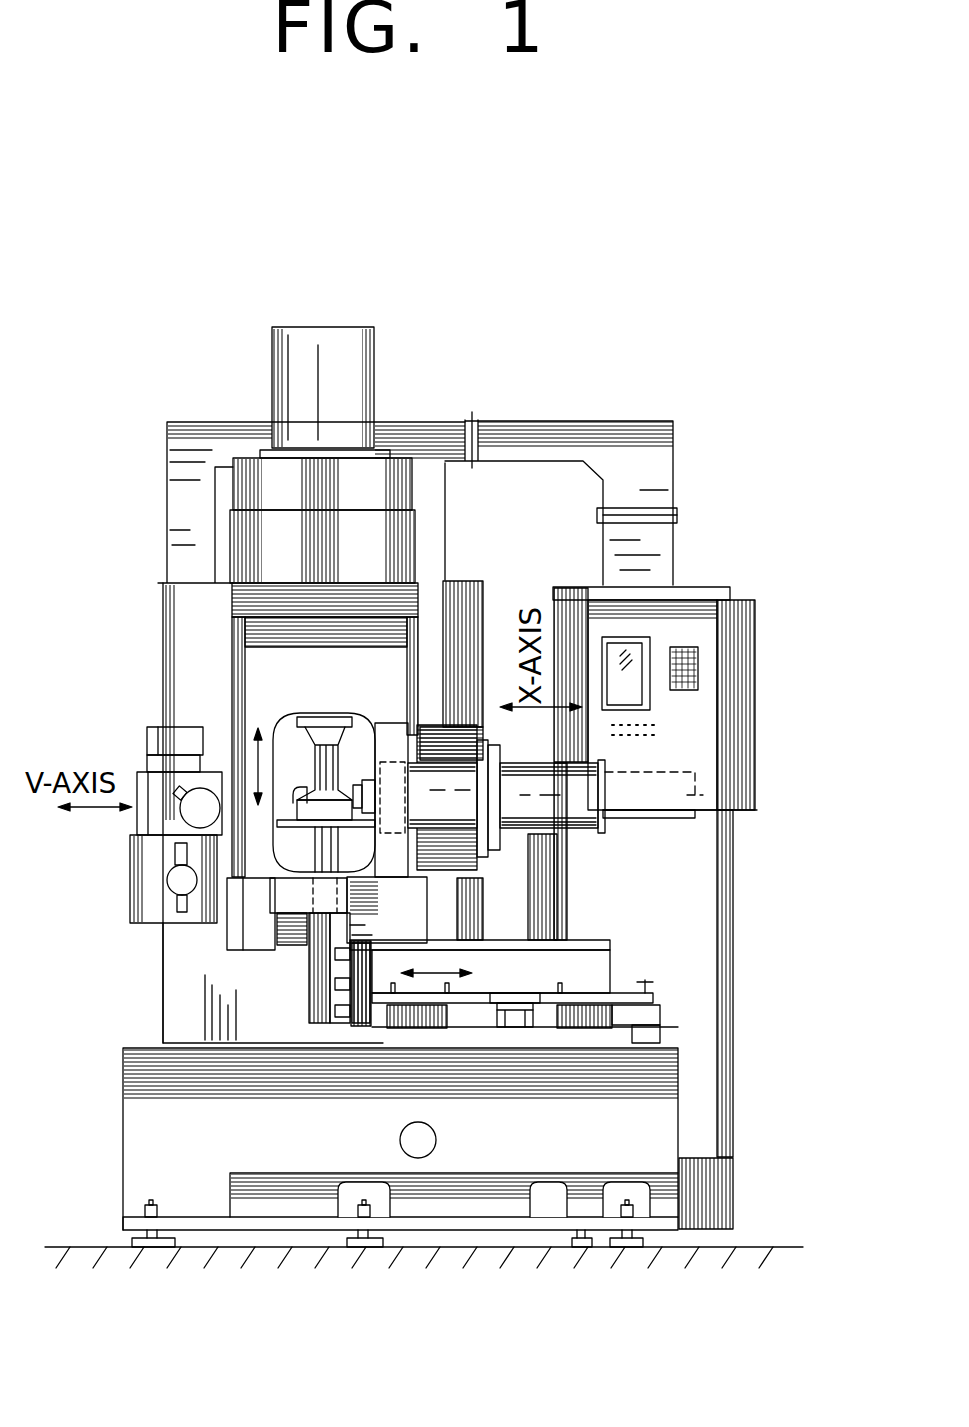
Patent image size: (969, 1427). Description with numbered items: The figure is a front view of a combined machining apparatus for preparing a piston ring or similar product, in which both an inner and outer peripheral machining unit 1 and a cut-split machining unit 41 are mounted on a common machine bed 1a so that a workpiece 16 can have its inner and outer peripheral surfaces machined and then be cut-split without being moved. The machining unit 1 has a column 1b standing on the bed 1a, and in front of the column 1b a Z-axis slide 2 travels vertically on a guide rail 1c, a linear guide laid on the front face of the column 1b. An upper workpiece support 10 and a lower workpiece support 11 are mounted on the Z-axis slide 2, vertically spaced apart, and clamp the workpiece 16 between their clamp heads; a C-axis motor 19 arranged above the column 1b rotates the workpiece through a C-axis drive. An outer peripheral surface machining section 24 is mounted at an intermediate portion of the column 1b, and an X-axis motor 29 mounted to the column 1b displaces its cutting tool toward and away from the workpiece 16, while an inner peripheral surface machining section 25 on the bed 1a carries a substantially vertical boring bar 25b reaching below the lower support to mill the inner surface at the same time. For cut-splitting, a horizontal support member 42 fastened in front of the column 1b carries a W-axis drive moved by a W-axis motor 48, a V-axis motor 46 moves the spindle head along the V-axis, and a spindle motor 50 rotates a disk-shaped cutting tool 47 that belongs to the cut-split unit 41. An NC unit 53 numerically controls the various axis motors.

The inner and outer peripheral machining unit 1 is at (492, 606).
The machine bed 1a is at (137, 1105).
The column 1b is at (187, 1013).
The guide rail 1c is at (235, 655).
The Z-axis slide 2 is at (258, 638).
The upper workpiece support 10 is at (253, 755).
The lower workpiece support 11 is at (350, 833).
The workpiece 16 is at (330, 758).
The C-axis motor 19 is at (343, 353).
The outer peripheral surface machining section 24 is at (563, 803).
The inner peripheral surface machining section 25 is at (625, 947).
The boring bar 25b is at (322, 978).
The X-axis motor 29 is at (737, 813).
The cut-split machining unit 41 is at (127, 890).
The support member 42 is at (147, 905).
The V-axis motor 46 is at (177, 737).
The cutting tool 47 is at (300, 805).
The W-axis motor 48 is at (170, 875).
The spindle motor 50 is at (182, 795).
The NC unit 53 is at (732, 657).